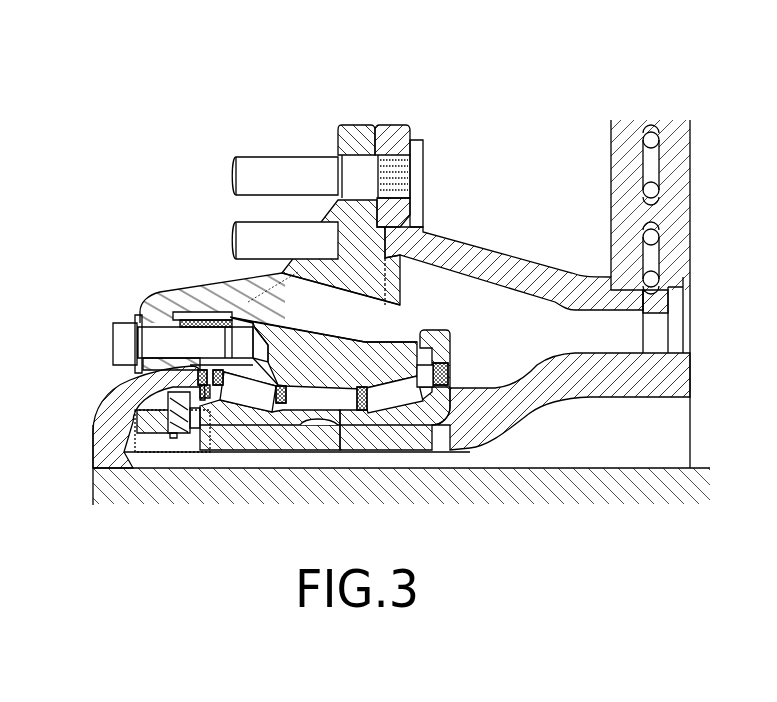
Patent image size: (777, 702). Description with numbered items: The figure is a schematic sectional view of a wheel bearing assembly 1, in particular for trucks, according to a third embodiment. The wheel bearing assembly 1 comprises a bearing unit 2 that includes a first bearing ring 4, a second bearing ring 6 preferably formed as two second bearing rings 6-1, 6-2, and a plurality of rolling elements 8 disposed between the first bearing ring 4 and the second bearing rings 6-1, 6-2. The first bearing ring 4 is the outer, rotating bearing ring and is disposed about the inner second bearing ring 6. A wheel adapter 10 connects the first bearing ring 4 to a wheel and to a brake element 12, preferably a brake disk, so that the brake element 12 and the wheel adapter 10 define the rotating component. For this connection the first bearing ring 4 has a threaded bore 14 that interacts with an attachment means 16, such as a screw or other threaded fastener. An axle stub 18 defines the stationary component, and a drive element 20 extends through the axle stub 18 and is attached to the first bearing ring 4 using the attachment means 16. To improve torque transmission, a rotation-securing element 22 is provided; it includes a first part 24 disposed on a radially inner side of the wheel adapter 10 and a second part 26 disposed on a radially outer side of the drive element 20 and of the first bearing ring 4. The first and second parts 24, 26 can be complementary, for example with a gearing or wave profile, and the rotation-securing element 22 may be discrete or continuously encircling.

The wheel bearing assembly 1 is at (572, 100).
The bearing unit 2 is at (378, 326).
The first bearing ring 4 is at (338, 357).
The second bearing ring 6 is at (348, 436).
The second bearing ring 6-1 is at (428, 417).
The second bearing ring 6-2 is at (262, 418).
The rolling elements 8 is at (278, 372).
The wheel adapter 10 is at (373, 272).
The brake element 12 is at (528, 266).
The threaded bore 14 is at (246, 331).
The attachment means 16 is at (118, 330).
The axle stub 18 is at (547, 408).
The drive element 20 is at (105, 497).
The rotation-securing element 22 is at (163, 302).
The first part 24 is at (202, 316).
The second part 26 is at (185, 323).